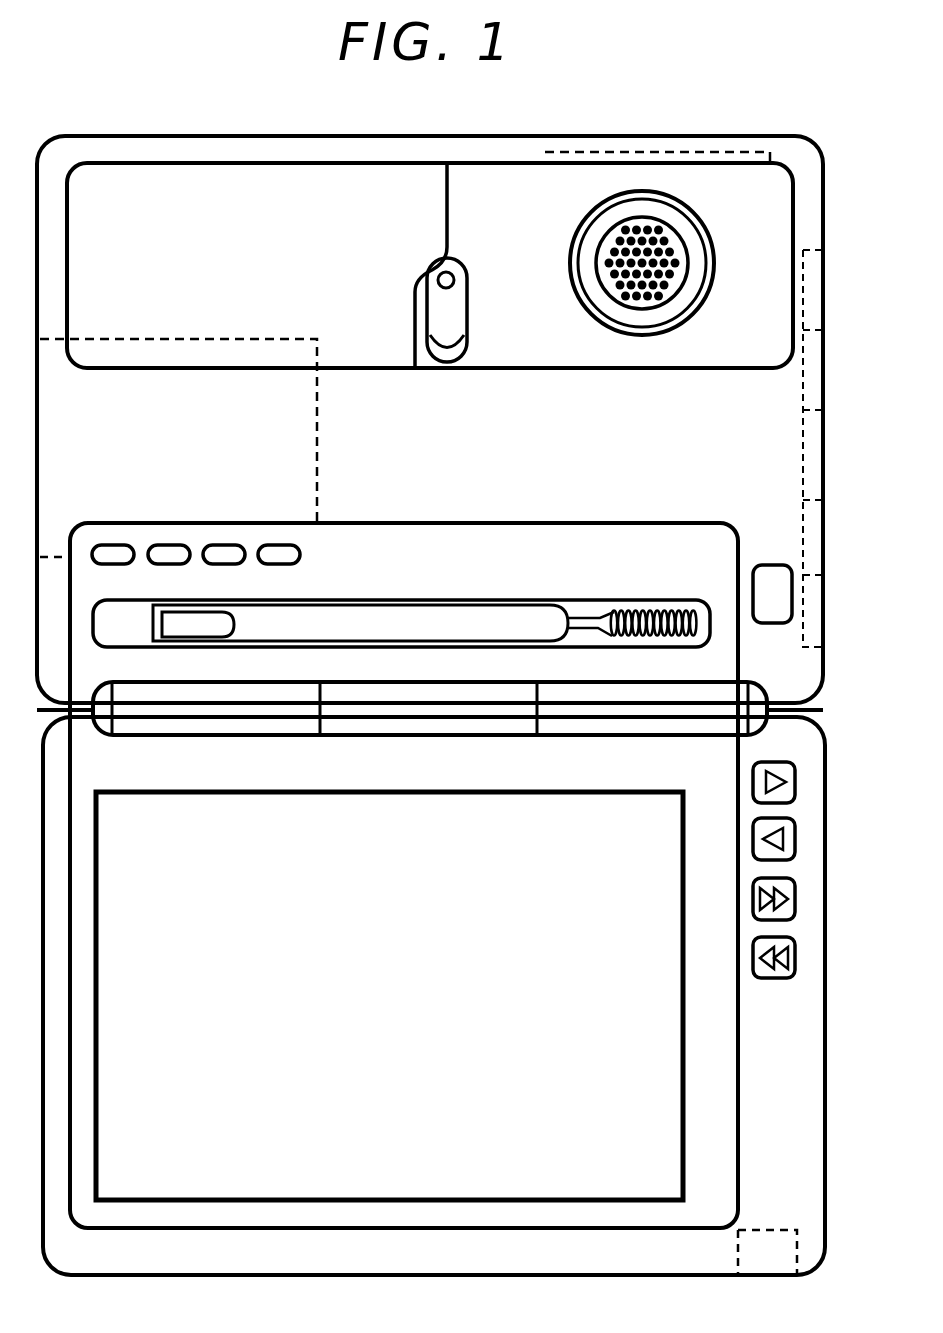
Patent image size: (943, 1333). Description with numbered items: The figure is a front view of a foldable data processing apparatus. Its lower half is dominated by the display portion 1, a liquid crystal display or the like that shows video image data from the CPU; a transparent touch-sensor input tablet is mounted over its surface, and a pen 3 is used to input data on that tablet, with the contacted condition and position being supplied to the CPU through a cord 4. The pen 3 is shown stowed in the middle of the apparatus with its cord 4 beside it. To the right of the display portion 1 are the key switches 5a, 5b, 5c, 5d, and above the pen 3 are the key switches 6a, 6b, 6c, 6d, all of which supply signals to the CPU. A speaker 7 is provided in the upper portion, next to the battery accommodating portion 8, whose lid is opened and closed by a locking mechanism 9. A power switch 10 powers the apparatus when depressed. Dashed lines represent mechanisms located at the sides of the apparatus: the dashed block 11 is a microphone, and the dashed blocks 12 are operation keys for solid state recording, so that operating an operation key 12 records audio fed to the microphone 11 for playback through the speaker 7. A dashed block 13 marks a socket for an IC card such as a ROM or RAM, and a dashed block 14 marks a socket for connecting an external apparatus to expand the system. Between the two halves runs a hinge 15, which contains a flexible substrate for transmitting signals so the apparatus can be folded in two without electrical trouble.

The display portion 1 is at (352, 815).
The pen 3 is at (430, 605).
The cord 4 is at (630, 608).
The key switch 5a is at (753, 783).
The key switch 5b is at (753, 840).
The key switch 5c is at (753, 900).
The key switch 5d is at (753, 958).
The key switch 6a is at (115, 545).
The key switch 6b is at (170, 545).
The key switch 6c is at (226, 545).
The key switch 6d is at (281, 545).
The speaker 7 is at (678, 237).
The battery accommodating portion 8 is at (380, 368).
The locking mechanism 9 is at (468, 306).
The power switch 10 is at (776, 565).
The microphone 11 is at (758, 1244).
The operation keys 12 is at (805, 412).
The socket 13 is at (302, 455).
The socket 14 is at (548, 150).
The hinge 15 is at (148, 735).